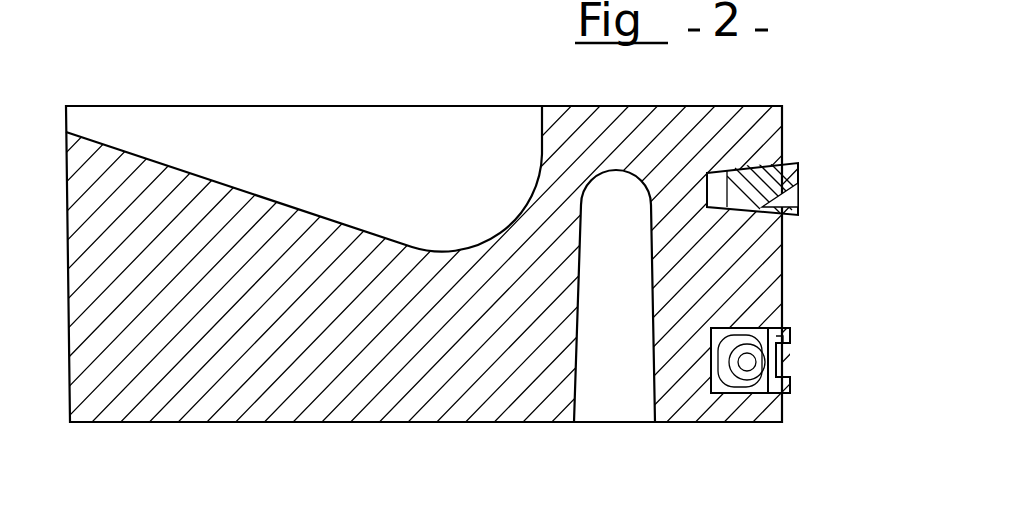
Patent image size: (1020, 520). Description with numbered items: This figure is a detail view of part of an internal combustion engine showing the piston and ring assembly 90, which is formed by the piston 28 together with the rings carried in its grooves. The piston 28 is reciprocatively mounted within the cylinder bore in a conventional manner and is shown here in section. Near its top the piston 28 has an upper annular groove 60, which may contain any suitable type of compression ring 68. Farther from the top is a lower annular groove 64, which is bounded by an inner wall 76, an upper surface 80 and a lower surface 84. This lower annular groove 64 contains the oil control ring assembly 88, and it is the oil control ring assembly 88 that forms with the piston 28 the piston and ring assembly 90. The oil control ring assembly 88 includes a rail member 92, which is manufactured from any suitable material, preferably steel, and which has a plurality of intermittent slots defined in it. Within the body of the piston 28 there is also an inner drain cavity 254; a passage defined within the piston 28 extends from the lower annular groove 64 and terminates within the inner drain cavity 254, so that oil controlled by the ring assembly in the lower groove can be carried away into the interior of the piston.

The piston and ring assembly 90 is at (797, 88).
The piston 28 is at (782, 123).
The inner drain cavity 254 is at (593, 407).
The compression ring 68 is at (798, 200).
The upper annular groove 60 is at (725, 190).
The oil control ring assembly 88 is at (800, 383).
The lower annular groove 64 is at (722, 397).
The inner wall 76 is at (712, 337).
The upper surface 80 is at (768, 326).
The rail member 92 is at (787, 331).
The lower surface 84 is at (773, 397).